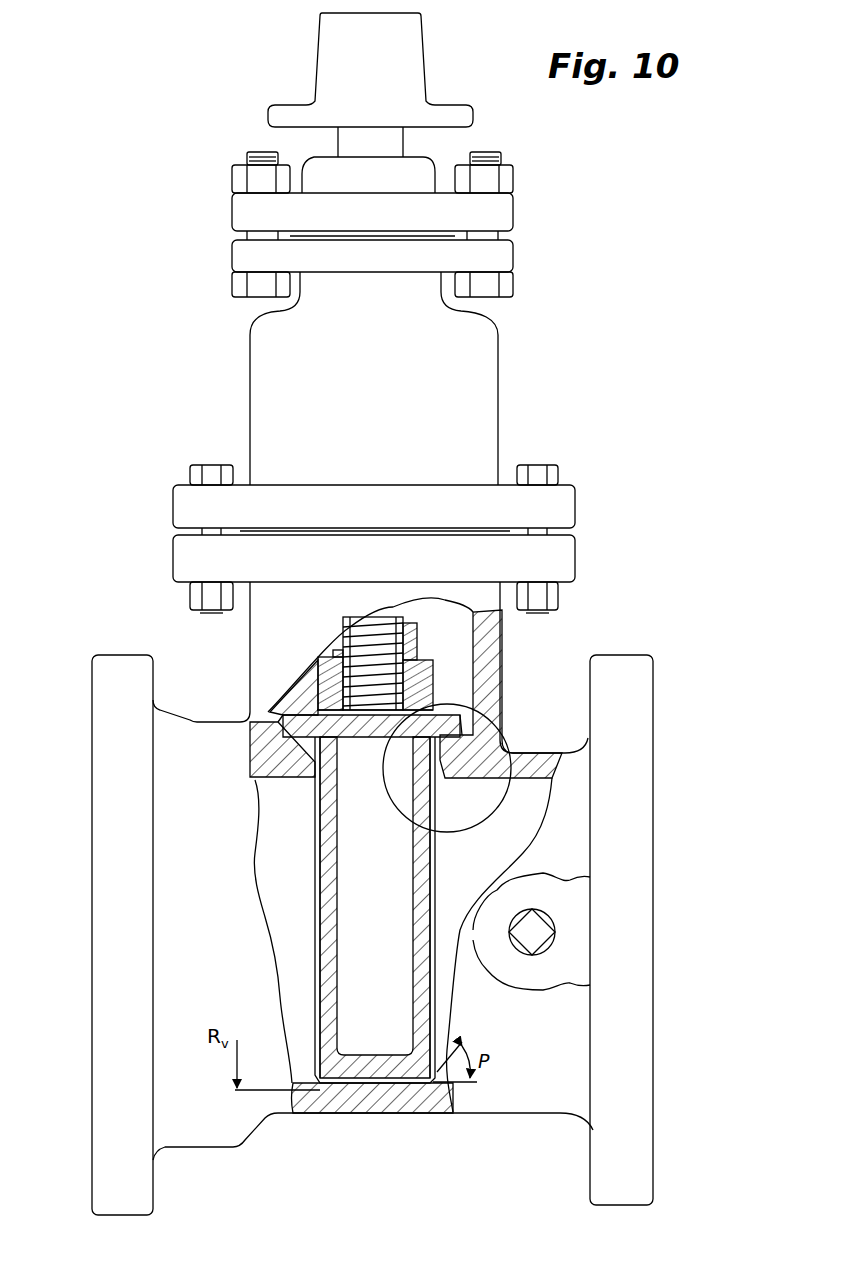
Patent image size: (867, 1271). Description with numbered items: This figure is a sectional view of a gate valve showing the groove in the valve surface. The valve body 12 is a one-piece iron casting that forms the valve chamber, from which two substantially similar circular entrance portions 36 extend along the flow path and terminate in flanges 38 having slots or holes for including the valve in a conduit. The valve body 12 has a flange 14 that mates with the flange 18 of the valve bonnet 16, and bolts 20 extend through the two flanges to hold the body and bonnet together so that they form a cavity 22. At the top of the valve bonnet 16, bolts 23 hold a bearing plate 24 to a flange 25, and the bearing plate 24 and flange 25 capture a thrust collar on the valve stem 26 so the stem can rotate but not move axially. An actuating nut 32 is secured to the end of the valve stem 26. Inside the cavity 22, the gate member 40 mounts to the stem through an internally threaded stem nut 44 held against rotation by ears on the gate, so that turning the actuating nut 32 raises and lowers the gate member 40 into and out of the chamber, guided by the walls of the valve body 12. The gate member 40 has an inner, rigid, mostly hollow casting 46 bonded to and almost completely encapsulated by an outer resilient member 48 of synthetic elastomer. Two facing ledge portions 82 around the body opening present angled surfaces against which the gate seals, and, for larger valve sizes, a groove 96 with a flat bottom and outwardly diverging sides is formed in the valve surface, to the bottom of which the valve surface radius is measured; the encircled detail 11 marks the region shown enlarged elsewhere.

The actuating nut 32 is at (425, 38).
The valve stem 26 is at (403, 135).
The bearing plate 24 is at (515, 205).
The flange 25 is at (518, 253).
The bolts 23 is at (232, 287).
The valve bonnet 16 is at (250, 388).
The bolts 20 is at (207, 467).
The flange 18 is at (173, 505).
The flange 14 is at (175, 557).
The valve body 12 is at (255, 653).
The cavity 22 is at (458, 628).
The stem nut 44 is at (413, 643).
The entrance portions 36 is at (262, 792).
The flanges 38 is at (132, 655).
The ledge portions 82 is at (283, 767).
The outer resilient member 48 is at (318, 892).
The inner rigid member 46 is at (328, 933).
The groove 96 is at (393, 1097).
The gate member 40 is at (400, 982).
The detail circle 11 is at (440, 828).